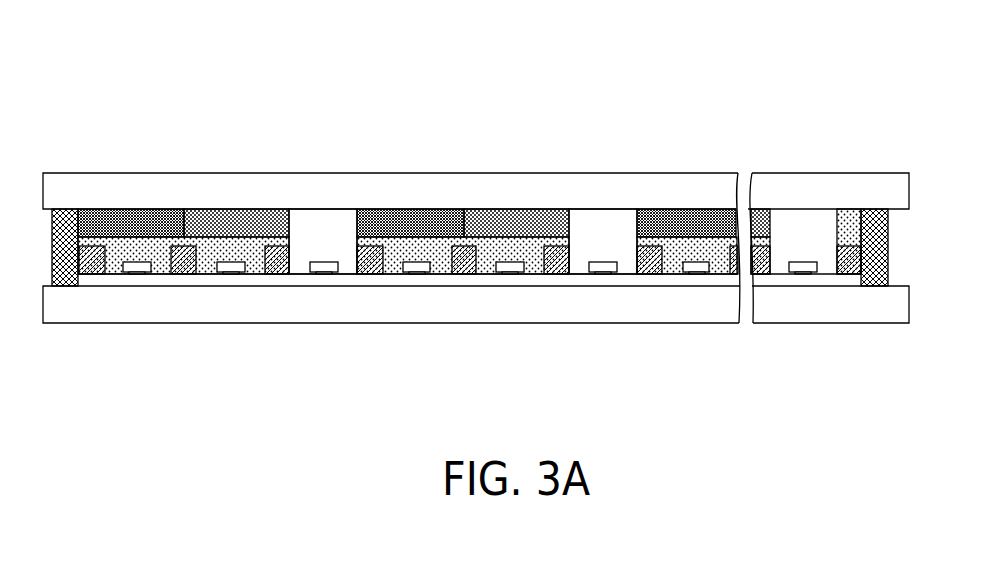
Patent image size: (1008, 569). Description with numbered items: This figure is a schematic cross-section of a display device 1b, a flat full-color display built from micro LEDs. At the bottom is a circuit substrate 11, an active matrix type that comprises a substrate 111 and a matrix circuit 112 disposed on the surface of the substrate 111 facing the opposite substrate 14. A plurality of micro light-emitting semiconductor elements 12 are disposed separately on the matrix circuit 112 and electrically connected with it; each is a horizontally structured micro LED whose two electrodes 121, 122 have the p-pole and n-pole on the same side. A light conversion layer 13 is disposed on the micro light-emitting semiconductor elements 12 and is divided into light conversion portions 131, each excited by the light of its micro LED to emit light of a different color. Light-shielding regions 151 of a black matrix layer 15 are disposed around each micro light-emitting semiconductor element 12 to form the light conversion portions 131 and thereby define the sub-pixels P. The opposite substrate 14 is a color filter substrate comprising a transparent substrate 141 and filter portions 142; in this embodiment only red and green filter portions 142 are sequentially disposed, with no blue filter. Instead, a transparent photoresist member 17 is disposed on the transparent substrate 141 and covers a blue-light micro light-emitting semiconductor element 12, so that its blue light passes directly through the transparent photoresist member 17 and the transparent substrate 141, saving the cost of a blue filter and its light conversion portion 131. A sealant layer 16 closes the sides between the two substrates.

The display device 1b is at (150, 50).
The circuit substrate 11 is at (532, 367).
The substrate 111 is at (453, 302).
The matrix circuit 112 is at (503, 280).
The micro light-emitting semiconductor element 12 is at (330, 272).
The electrode 121 is at (129, 272).
The electrode 122 is at (147, 272).
The light conversion layer 13 is at (469, 286).
The light conversion portion 131 is at (205, 272).
The opposite substrate 14 is at (273, 132).
The transparent substrate 141 is at (165, 195).
The filter portion 142 is at (262, 213).
The black matrix layer 15 is at (470, 306).
The light-shielding region 151 is at (647, 268).
The sealant layer 16 is at (58, 260).
The transparent photoresist member 17 is at (335, 215).
The sub-pixel P is at (303, 210).